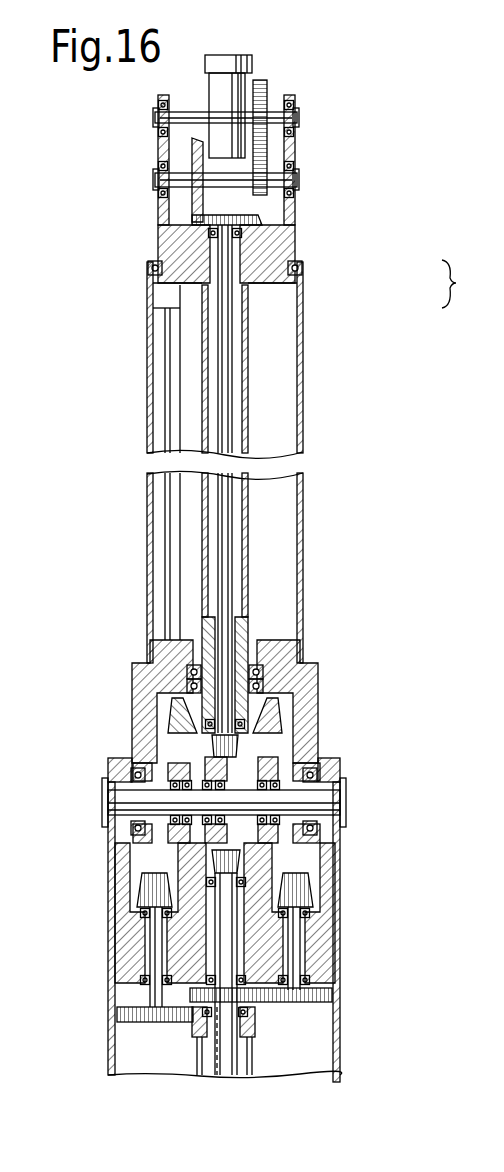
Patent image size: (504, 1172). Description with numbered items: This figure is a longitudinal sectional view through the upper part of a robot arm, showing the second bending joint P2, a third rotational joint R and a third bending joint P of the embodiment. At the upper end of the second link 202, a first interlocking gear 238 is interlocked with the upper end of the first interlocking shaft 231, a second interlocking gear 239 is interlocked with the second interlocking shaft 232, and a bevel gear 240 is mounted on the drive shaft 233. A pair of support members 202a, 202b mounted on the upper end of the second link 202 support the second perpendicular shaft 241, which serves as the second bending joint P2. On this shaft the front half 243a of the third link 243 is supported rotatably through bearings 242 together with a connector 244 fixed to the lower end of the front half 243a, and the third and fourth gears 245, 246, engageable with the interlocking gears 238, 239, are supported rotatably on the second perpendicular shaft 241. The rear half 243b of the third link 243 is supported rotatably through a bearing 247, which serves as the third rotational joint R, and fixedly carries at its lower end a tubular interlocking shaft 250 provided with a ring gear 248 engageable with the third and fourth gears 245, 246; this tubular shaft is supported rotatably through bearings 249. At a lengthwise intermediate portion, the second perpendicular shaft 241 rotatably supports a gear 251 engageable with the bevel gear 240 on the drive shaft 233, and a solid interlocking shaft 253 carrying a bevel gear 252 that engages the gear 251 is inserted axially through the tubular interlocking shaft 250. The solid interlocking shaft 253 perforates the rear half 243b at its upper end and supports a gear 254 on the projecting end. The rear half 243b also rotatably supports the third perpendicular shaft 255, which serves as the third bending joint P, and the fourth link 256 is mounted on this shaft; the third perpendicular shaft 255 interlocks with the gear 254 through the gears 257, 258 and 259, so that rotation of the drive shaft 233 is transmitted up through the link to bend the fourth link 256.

The fourth link 256 is at (252, 64).
The gear 257 is at (268, 86).
The third perpendicular shaft 255 is at (300, 117).
The gear 258 is at (268, 195).
The gear 259 is at (192, 158).
The gear 254 is at (200, 222).
The bearing 247 is at (150, 273).
The front half of the third link 243a is at (304, 332).
The rear half of the third link 243b is at (300, 250).
The third link 243 is at (472, 284).
The solid interlocking shaft 253 is at (230, 400).
The tubular interlocking shaft 250 is at (250, 525).
The connector 244 is at (133, 695).
The third gear 245 is at (170, 722).
The fourth gear 246 is at (283, 748).
The ring gear 248 is at (255, 705).
The bearings 249 is at (263, 676).
The bevel gear 252 is at (206, 745).
The gear 251 is at (112, 768).
The bearings 242 is at (107, 800).
The second perpendicular shaft 241 is at (328, 797).
The second link 202 is at (342, 1040).
The support member 202a is at (120, 846).
The support member 202b is at (330, 845).
The first interlocking gear 238 is at (145, 890).
The second interlocking gear 239 is at (302, 893).
The bevel gear 240 is at (240, 862).
The drive shaft 233 is at (228, 945).
The second interlocking shaft 232 is at (220, 1060).
The first interlocking shaft 231 is at (195, 1048).
The bending joint P is at (156, 117).
The rotational joint R is at (134, 268).
The second bending joint P2 is at (350, 787).